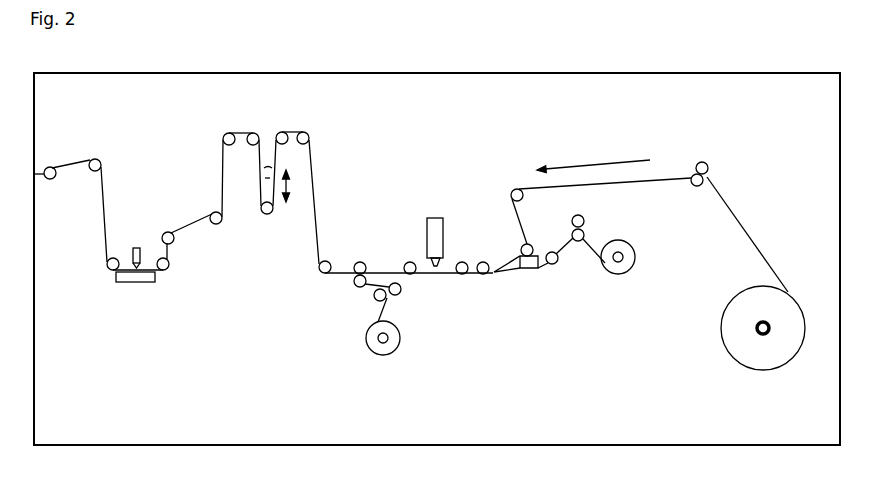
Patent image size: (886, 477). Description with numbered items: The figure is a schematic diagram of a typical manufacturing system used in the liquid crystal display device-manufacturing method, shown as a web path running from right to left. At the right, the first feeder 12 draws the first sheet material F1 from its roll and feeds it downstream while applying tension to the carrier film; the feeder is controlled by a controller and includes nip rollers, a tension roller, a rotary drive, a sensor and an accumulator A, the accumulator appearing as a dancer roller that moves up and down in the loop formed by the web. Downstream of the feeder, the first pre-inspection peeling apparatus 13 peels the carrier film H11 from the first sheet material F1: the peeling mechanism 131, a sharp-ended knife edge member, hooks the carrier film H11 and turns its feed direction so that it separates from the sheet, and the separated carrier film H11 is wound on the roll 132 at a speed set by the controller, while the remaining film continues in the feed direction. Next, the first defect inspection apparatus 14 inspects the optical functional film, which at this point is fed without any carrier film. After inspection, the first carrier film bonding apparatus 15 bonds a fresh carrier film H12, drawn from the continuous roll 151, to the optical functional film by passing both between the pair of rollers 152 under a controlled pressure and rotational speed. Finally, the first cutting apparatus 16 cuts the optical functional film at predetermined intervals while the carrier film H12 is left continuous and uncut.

The first feeder 12 is at (725, 160).
The first pre-inspection peeling apparatus 13 is at (576, 279).
The peeling mechanism 131 is at (532, 262).
The roll 132 is at (617, 268).
The carrier film H11 is at (588, 241).
The first defect inspection apparatus 14 is at (435, 218).
The first carrier film bonding apparatus 15 is at (359, 338).
The continuous roll 151 is at (383, 355).
The pair of rollers 152 is at (349, 306).
The carrier film H12 is at (388, 305).
The first cutting apparatus 16 is at (138, 248).
The accumulator A is at (264, 236).
The first sheet material F1 is at (792, 296).